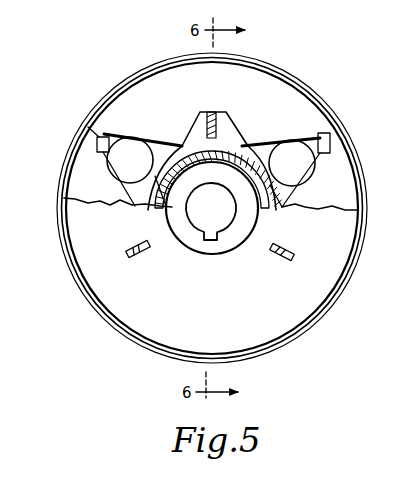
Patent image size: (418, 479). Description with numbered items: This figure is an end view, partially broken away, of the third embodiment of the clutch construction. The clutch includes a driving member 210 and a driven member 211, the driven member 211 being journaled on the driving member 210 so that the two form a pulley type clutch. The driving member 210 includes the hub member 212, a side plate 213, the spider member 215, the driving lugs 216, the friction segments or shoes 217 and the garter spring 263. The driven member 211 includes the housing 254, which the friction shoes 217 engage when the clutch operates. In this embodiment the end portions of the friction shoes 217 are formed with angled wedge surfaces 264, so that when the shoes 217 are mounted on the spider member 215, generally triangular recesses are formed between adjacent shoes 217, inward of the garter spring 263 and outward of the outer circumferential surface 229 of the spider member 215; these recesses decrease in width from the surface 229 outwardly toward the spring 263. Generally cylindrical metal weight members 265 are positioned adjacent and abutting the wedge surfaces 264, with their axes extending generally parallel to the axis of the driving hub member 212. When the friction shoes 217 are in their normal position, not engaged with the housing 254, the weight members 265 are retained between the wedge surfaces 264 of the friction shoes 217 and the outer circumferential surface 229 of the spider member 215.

The driving member 210 is at (300, 307).
The driven member 211 is at (112, 329).
The hub member 212 is at (232, 243).
The side plate 213 is at (103, 284).
The spider member 215 is at (252, 160).
The driving lug 216 is at (216, 122).
The friction segment 217 is at (243, 73).
The outer circumferential surface 229 is at (118, 189).
The housing 254 is at (352, 275).
The garter spring 263 is at (331, 140).
The wedge surface 264 is at (158, 143).
The weight member 265 is at (98, 142).